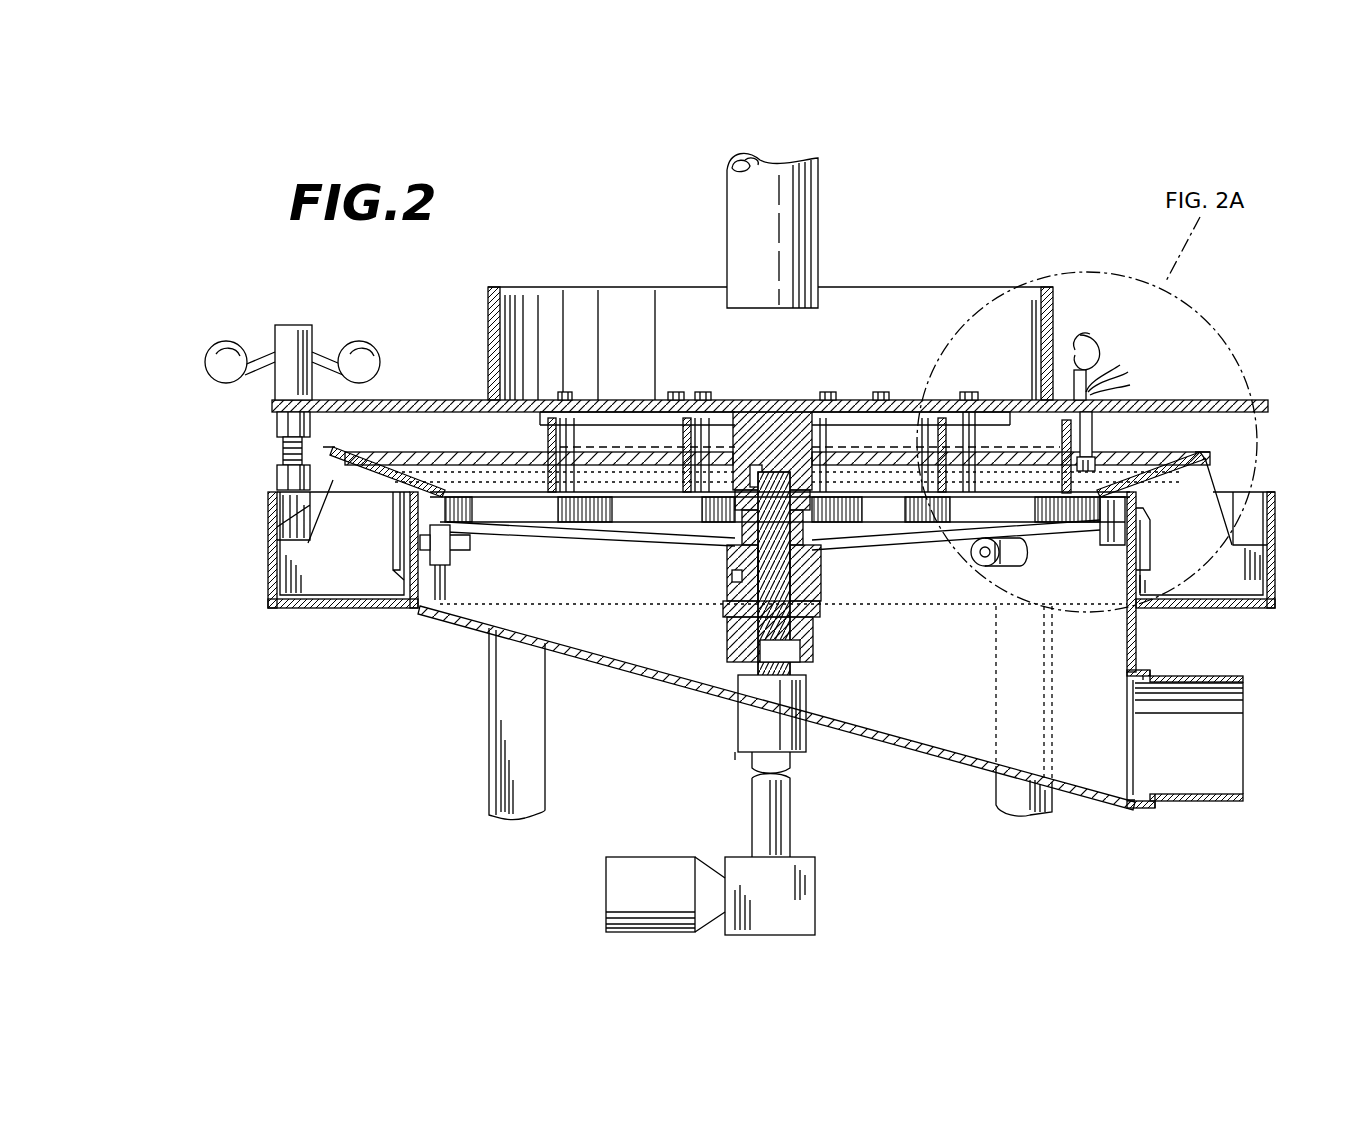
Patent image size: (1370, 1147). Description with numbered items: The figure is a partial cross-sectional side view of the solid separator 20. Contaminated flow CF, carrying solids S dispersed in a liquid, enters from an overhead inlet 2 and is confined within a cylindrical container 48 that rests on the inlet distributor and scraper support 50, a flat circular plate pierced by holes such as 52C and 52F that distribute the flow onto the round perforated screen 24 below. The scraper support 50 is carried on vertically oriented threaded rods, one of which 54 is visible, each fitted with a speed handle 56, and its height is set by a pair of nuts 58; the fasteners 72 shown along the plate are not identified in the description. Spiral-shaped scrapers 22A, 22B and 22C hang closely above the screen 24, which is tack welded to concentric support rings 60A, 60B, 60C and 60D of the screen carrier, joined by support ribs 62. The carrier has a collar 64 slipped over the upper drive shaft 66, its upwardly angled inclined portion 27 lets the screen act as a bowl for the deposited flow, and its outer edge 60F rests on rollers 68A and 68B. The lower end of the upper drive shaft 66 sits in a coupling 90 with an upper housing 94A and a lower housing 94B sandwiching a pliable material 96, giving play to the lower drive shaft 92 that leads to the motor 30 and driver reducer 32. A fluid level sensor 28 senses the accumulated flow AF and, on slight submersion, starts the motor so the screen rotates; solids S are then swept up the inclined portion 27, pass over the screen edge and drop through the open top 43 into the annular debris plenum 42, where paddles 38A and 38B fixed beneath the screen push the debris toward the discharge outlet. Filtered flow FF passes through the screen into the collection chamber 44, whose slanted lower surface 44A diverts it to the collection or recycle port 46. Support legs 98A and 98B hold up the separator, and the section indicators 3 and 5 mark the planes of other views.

The overhead inlet 2 is at (818, 205).
The solid separator 20 is at (1078, 158).
The screen 24 is at (1050, 540).
The inclined portion 27 is at (358, 490).
The fluid level sensor 28 is at (1100, 440).
The motor 30 is at (606, 865).
The driver reducer 32 is at (810, 920).
The paddle 38A is at (345, 605).
The paddle 38B is at (1270, 595).
The annular debris plenum 42 is at (268, 598).
The top 43 is at (1252, 500).
The collection chamber 44 is at (945, 646).
The slanted lower surface 44A is at (940, 762).
The collection or recycle port 46 is at (1172, 802).
The cylindrical container 48 is at (488, 328).
The inlet distributor and scraper support 50 is at (1218, 402).
The hole 52C is at (990, 408).
The hole 52F is at (645, 408).
The threaded rod 54 is at (272, 447).
The speed handle 56 is at (292, 345).
The nuts 58 is at (268, 412).
The support ring 60A is at (662, 510).
The support ring 60B is at (520, 575).
The support ring 60C is at (565, 510).
The support ring 60D is at (508, 512).
The outer edge 60F is at (1140, 545).
The support ribs 62 is at (700, 538).
The collar 64 is at (700, 505).
The upper drive shaft 66 is at (808, 612).
The roller 68A is at (1015, 580).
The roller 68B is at (445, 620).
The bolt 72 is at (548, 390).
The coupling 90 is at (745, 672).
The lower drive shaft 92 is at (812, 655).
The upper housing 94A is at (725, 640).
The lower housing 94B is at (820, 680).
The pliable material 96 is at (755, 415).
The support leg 98A is at (489, 720).
The support leg 98B is at (1022, 820).
The spiral-shaped scraper 22A is at (812, 445).
The spiral-shaped scraper 22B is at (858, 420).
The spiral-shaped scraper 22C is at (1068, 420).
The section line 3 is at (220, 440).
The section line 5 is at (217, 520).
The contaminated flow CF is at (770, 380).
The accumulated flow AF is at (1125, 490).
The filtered flow FF is at (535, 545).
The solids S is at (650, 512).